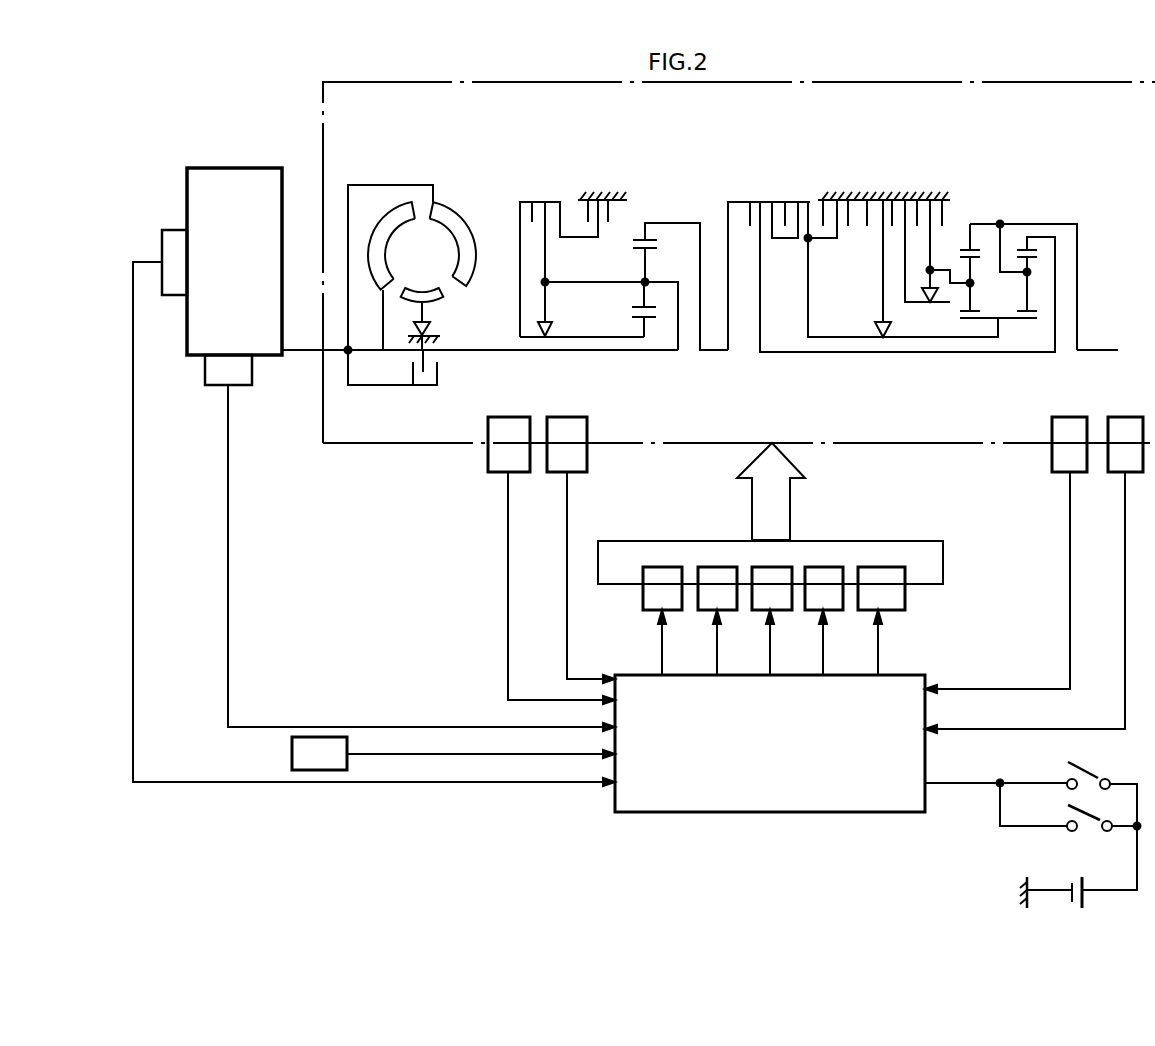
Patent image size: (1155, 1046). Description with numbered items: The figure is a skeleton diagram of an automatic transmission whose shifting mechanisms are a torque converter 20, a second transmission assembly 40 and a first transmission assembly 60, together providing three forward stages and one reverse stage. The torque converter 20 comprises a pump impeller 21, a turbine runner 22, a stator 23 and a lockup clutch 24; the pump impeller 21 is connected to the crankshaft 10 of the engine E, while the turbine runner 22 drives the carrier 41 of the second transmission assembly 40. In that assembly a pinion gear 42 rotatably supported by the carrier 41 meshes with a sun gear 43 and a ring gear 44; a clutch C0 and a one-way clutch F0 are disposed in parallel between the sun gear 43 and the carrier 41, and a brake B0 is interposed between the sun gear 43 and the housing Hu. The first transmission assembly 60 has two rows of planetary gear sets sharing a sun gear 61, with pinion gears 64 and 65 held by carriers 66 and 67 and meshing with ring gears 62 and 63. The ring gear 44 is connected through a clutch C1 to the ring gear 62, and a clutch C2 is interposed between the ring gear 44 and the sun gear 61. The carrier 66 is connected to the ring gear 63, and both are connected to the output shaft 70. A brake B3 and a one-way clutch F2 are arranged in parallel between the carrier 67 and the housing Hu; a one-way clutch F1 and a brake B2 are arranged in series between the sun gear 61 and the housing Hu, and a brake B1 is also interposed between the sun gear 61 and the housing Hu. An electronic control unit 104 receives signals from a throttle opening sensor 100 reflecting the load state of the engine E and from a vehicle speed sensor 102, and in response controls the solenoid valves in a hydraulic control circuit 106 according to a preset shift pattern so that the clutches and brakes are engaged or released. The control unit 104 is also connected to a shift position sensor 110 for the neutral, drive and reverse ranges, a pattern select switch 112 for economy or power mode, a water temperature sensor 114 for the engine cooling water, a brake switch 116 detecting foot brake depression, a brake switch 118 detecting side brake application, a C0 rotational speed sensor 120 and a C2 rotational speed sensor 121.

The engine E is at (220, 182).
The crankshaft 10 is at (300, 352).
The torque converter 20 is at (393, 160).
The pump impeller 21 is at (443, 204).
The turbine runner 22 is at (387, 223).
The stator 23 is at (440, 298).
The lockup clutch 24 is at (381, 387).
The second transmission assembly 40 is at (627, 156).
The carrier 41 is at (652, 281).
The pinion gear 42 is at (636, 250).
The sun gear 43 is at (637, 320).
The ring gear 44 is at (644, 228).
The first transmission assembly 60 is at (1056, 169).
The sun gear 61 is at (1007, 322).
The ring gear 62 is at (1022, 247).
The ring gear 63 is at (968, 248).
The pinion gear 64 is at (1032, 265).
The pinion gear 65 is at (976, 266).
The carrier 66 is at (1028, 290).
The carrier 67 is at (948, 270).
The output shaft 70 is at (1105, 351).
The throttle opening sensor 100 is at (215, 376).
The vehicle speed sensor 102 is at (1126, 426).
The electronic control unit 104 is at (762, 813).
The hydraulic control circuit 106 is at (943, 562).
The shift position sensor 110 is at (510, 427).
The pattern select switch 112 is at (292, 753).
The water temperature sensor 114 is at (172, 240).
The brake switch 116 is at (1099, 768).
The brake switch 118 is at (1086, 829).
The C0 rotational speed sensor 120 is at (569, 427).
The C2 rotational speed sensor 121 is at (1070, 426).
The clutch C0 is at (540, 200).
The brake B0 is at (612, 208).
The one-way clutch F0 is at (553, 333).
The housing Hu is at (590, 192).
The clutch C1 is at (756, 201).
The clutch C2 is at (792, 201).
The brake B1 is at (848, 200).
The brake B2 is at (892, 202).
The brake B3 is at (940, 200).
The one-way clutch F1 is at (872, 324).
The one-way clutch F2 is at (930, 304).